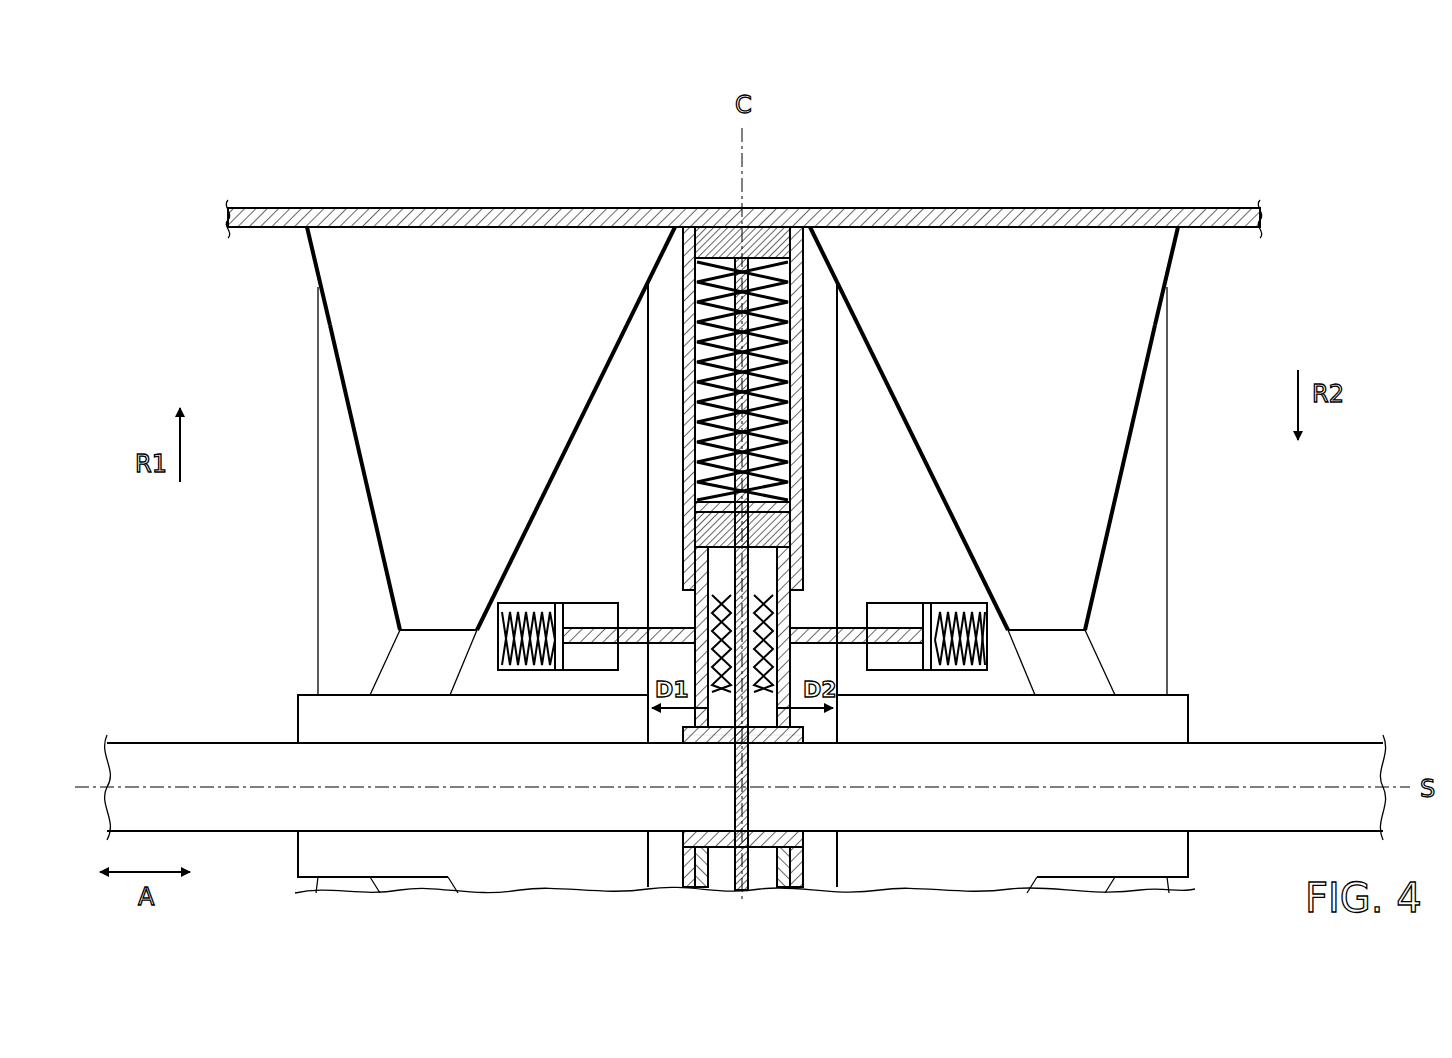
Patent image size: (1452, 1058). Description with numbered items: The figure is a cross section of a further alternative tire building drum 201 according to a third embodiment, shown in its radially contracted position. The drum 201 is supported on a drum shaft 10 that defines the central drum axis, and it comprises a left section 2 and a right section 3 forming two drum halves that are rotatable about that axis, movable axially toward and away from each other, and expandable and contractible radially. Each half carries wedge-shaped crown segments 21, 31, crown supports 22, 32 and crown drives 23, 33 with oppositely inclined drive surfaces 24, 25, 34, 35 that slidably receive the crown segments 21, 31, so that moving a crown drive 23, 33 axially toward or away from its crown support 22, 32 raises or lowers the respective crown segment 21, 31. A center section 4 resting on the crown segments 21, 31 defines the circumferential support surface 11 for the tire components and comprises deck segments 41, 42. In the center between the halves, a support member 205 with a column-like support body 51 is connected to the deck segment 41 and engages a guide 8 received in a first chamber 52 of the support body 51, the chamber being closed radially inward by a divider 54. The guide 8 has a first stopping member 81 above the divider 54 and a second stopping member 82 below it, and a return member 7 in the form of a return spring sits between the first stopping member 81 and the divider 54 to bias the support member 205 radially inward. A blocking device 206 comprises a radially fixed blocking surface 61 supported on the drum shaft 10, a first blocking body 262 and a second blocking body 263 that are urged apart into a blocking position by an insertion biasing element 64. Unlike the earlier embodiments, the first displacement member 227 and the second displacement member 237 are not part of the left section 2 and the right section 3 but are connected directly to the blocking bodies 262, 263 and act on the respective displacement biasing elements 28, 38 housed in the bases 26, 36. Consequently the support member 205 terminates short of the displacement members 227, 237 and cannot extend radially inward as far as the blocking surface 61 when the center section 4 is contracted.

The tire building drum 201 is at (176, 124).
The center section 4 is at (560, 208).
The circumferential support surface 11 is at (490, 208).
The deck segment 41 is at (864, 220).
The plate surface 42 is at (986, 208).
The left section 2 is at (318, 382).
The crown segment 21 is at (332, 290).
The drive surface 24 is at (335, 450).
The crown support 22 is at (335, 543).
The drive surface 25 is at (648, 482).
The crown drive 23 is at (312, 716).
The right section 3 is at (1167, 372).
The crown segment 31 is at (1165, 300).
The drive surface 34 is at (1118, 470).
The crown support 32 is at (1148, 540).
The drive surface 35 is at (837, 502).
The crown drive 33 is at (1175, 718).
The drum shaft 10 is at (150, 757).
The support body 51 is at (683, 334).
The support member 205 is at (690, 402).
The return member 7 is at (722, 232).
The first stopping member 81 is at (780, 227).
The first chamber 52 is at (706, 300).
The divider 54 is at (716, 494).
The guide 8 is at (758, 380).
The second stopping member 82 is at (800, 530).
The insertion biasing element 64 is at (710, 598).
The blocking surface 61 is at (752, 743).
The first blocking body 262 is at (702, 745).
The second blocking body 263 is at (800, 745).
The blocking device 206 is at (668, 732).
The base 26 is at (558, 663).
The displacement biasing element 28 is at (508, 650).
The first displacement member 227 is at (596, 644).
The base 36 is at (927, 663).
The displacement biasing element 38 is at (982, 650).
The second displacement member 237 is at (855, 644).